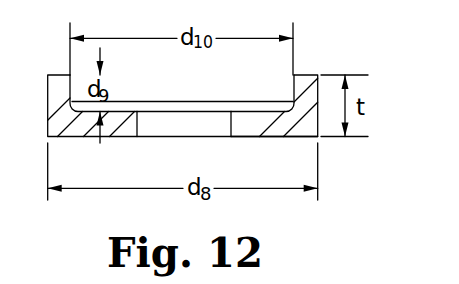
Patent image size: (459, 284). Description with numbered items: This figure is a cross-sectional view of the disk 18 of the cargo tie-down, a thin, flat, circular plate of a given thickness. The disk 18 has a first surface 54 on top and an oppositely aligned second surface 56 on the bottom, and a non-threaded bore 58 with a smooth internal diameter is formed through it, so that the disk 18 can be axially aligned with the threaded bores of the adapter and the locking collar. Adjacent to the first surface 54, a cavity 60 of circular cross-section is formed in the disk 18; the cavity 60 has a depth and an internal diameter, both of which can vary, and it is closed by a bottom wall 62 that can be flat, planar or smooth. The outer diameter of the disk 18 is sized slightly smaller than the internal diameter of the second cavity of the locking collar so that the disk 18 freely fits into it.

The disk 18 is at (356, 33).
The first surface 54 is at (305, 75).
The second surface 56 is at (302, 139).
The non-threaded bore 58 is at (138, 134).
The cavity 60 is at (70, 82).
The bottom wall 62 is at (128, 88).